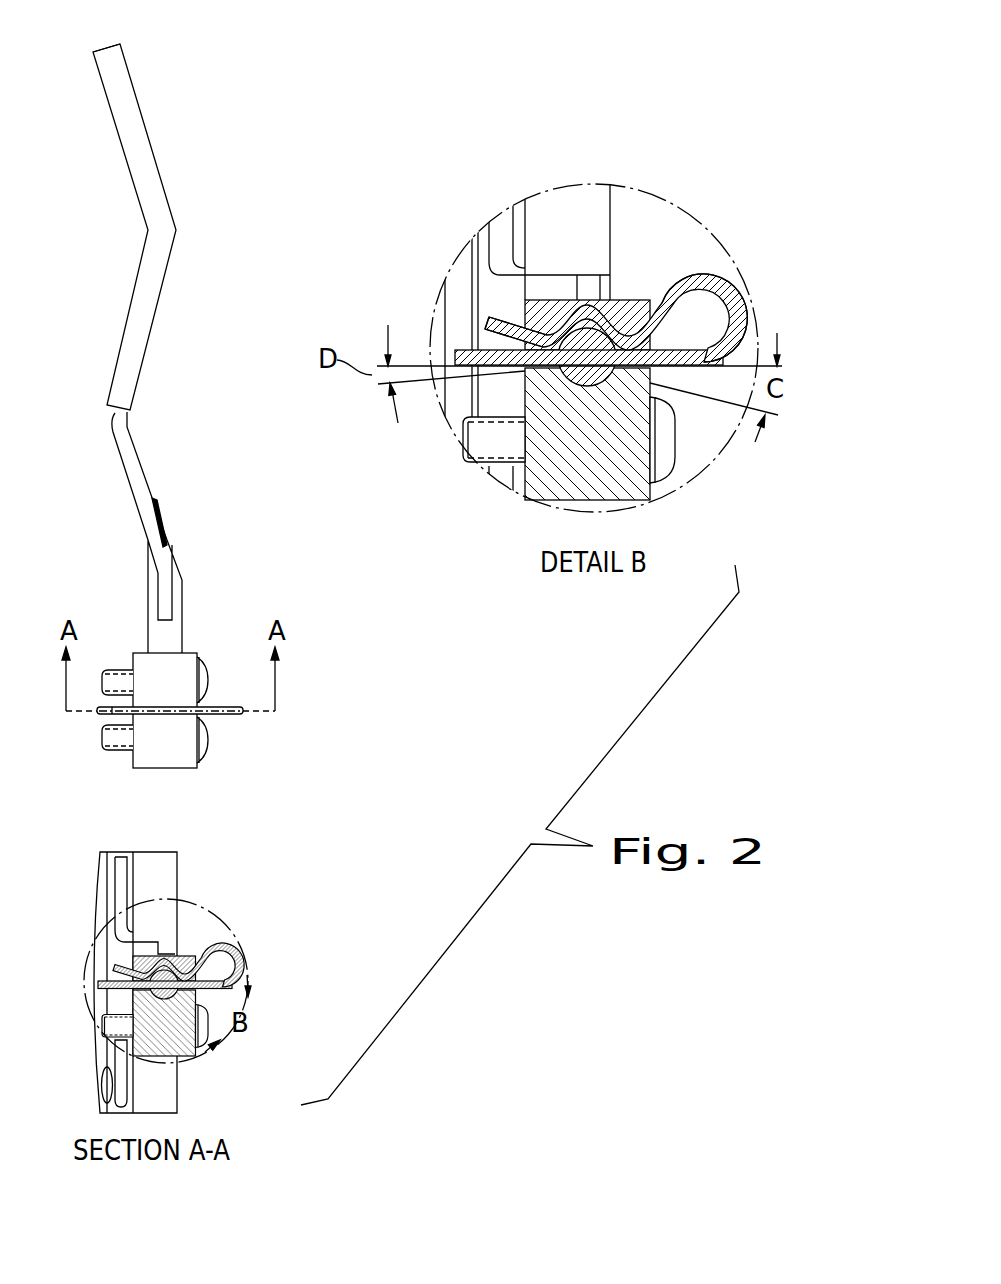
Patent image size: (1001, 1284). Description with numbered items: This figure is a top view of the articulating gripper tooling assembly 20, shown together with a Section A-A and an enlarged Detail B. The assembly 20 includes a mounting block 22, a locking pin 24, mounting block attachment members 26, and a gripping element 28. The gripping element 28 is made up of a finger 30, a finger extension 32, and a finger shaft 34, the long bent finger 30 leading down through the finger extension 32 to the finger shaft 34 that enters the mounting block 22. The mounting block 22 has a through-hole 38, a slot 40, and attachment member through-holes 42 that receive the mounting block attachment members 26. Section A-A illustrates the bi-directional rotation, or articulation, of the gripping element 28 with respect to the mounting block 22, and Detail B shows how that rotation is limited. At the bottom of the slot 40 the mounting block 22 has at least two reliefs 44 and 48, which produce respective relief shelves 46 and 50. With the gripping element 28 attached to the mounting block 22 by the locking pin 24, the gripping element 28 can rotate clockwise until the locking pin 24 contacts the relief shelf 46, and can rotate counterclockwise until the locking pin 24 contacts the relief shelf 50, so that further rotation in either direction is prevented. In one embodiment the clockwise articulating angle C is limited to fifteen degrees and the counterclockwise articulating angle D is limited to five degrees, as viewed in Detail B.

The articulating gripper tooling assembly 20 is at (180, 86).
The mounting block 22 is at (165, 768).
The locking pin 24 is at (642, 343).
The mounting block attachment members 26 is at (208, 683).
The gripping element 28 is at (158, 163).
The finger 30 is at (101, 46).
The finger extension 32 is at (140, 463).
The finger shaft 34 is at (182, 612).
The through-hole 38 is at (562, 384).
The slot 40 is at (198, 713).
The attachment member through-holes 42 is at (132, 668).
The relief 44 is at (658, 347).
The relief shelf 46 is at (658, 385).
The relief 48 is at (536, 337).
The relief shelf 50 is at (490, 352).